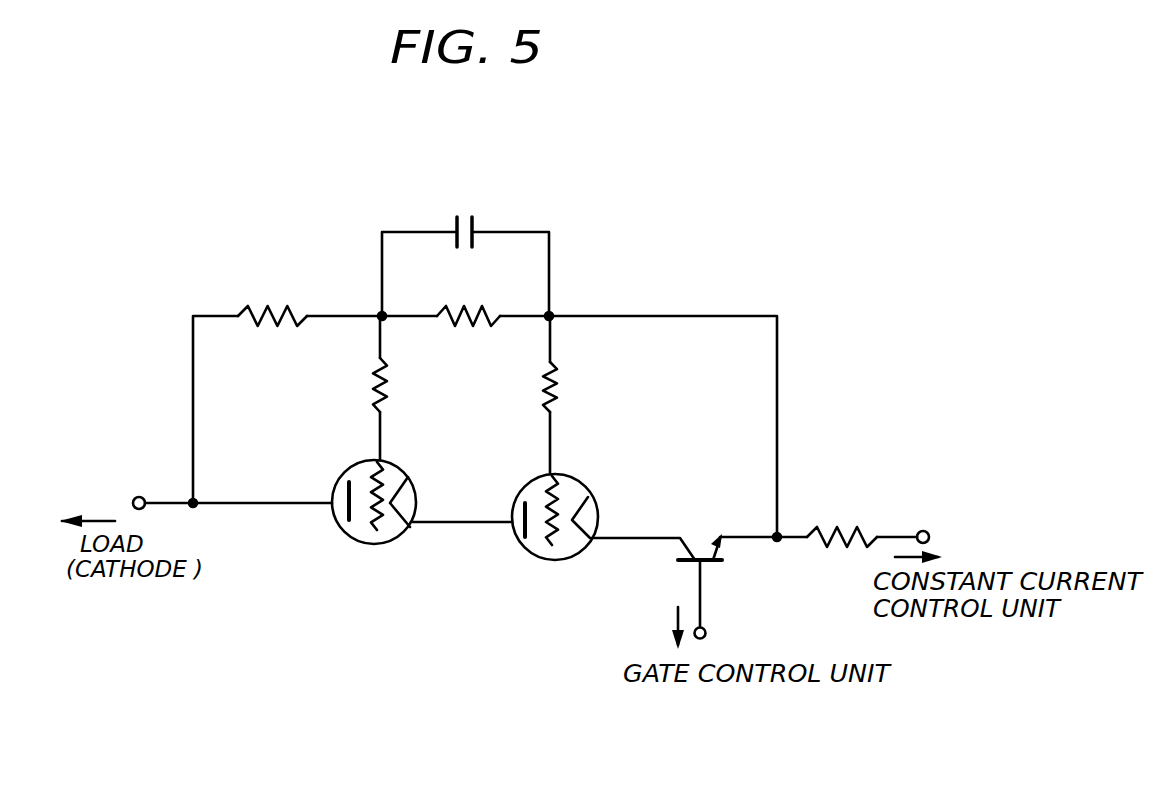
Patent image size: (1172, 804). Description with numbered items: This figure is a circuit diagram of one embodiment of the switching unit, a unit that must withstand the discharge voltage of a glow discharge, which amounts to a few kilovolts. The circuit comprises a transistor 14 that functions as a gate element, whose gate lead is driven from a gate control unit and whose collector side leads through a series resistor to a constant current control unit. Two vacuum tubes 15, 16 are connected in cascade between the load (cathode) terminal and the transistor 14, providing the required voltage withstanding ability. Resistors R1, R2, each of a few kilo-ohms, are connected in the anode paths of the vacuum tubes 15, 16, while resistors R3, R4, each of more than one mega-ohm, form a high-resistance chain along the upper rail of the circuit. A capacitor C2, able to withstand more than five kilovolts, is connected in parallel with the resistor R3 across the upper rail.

The capacitor C2 is at (454, 208).
The resistor R1 is at (560, 386).
The resistor R2 is at (397, 392).
The resistor R3 is at (466, 330).
The resistor R4 is at (283, 330).
The transistor 14 is at (712, 565).
The vacuum tube 15 is at (556, 560).
The vacuum tube 16 is at (418, 493).